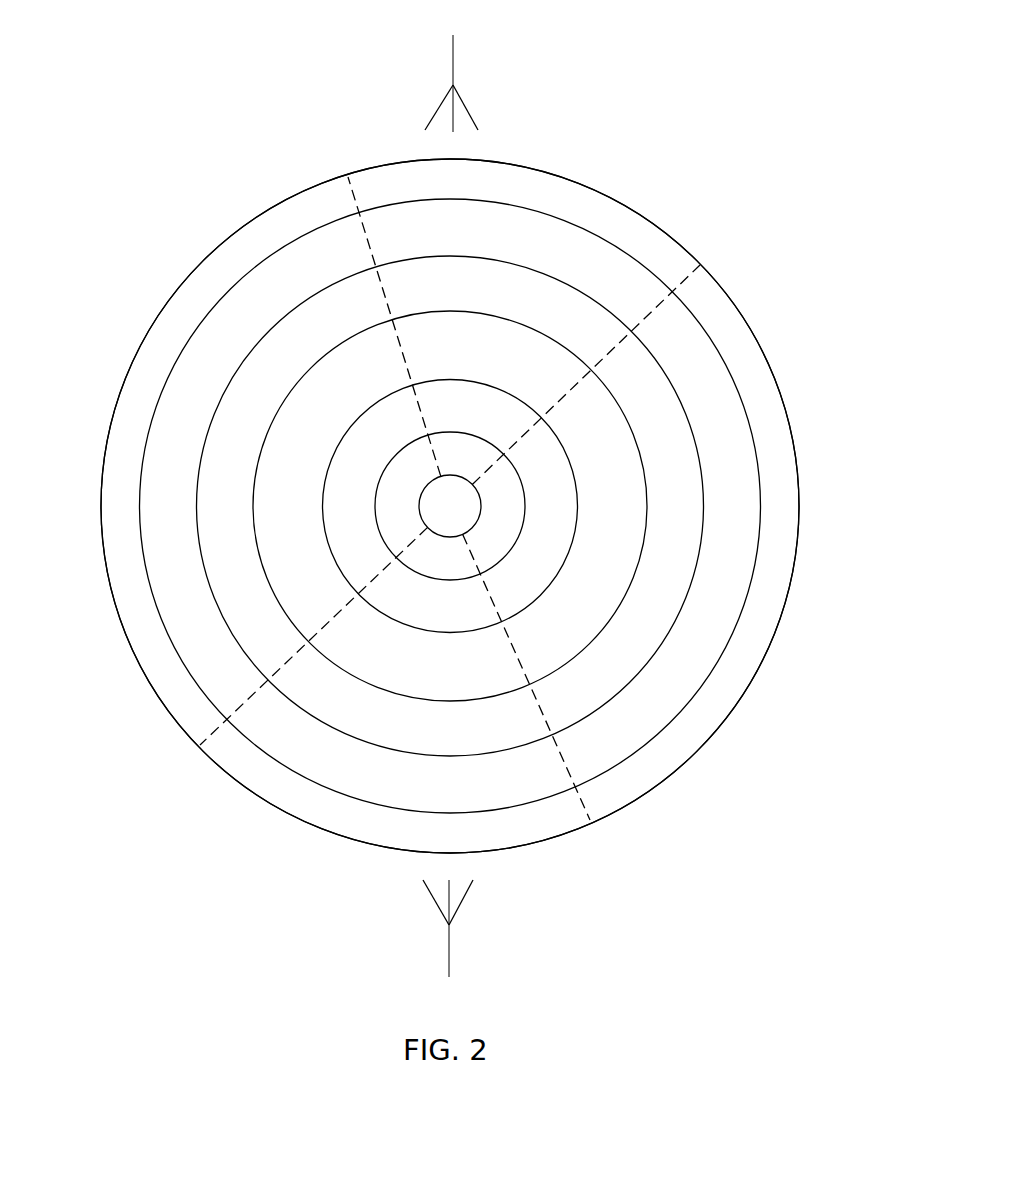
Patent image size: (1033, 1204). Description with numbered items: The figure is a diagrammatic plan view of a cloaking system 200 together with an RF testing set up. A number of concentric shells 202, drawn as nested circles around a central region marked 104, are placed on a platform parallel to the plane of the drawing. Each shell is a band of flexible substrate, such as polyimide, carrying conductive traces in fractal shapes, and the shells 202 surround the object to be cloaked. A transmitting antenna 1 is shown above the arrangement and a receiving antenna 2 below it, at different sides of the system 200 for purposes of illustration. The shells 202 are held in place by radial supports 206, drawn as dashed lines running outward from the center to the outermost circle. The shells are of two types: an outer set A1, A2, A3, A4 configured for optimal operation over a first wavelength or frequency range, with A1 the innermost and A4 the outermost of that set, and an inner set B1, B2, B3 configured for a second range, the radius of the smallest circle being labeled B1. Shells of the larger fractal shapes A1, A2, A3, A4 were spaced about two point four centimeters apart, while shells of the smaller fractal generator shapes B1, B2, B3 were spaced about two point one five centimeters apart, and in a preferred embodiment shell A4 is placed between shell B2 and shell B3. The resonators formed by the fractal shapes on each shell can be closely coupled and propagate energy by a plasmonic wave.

The cloaking system 200 is at (175, 77).
The transmitting antenna 1 is at (452, 63).
The receiving antenna 2 is at (448, 955).
The concentric shells 202 is at (424, 506).
The center element 104 is at (468, 516).
The radial supports 206 is at (352, 200).
The shell B1 is at (465, 477).
The shell B2 is at (503, 560).
The shell A1 is at (525, 606).
The shell B3 is at (562, 666).
The shell A2 is at (590, 715).
The shell A3 is at (622, 760).
The shell A4 is at (635, 797).